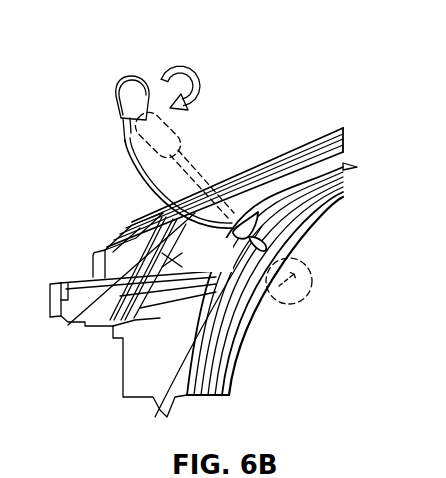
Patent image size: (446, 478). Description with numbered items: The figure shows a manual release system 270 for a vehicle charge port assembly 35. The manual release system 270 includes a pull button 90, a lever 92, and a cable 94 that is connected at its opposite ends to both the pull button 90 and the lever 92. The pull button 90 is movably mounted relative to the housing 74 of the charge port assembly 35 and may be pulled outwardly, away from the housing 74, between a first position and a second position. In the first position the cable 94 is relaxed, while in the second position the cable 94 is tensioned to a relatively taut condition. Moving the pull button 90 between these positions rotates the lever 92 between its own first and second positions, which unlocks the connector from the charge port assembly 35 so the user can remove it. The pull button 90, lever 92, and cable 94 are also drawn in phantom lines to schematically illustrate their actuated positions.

The lever 92 is at (128, 74).
The cable 94 is at (193, 192).
The manual release system 270 is at (135, 119).
The housing 74 is at (334, 127).
The charge port assembly 35 is at (362, 187).
The pull button 90 is at (313, 270).